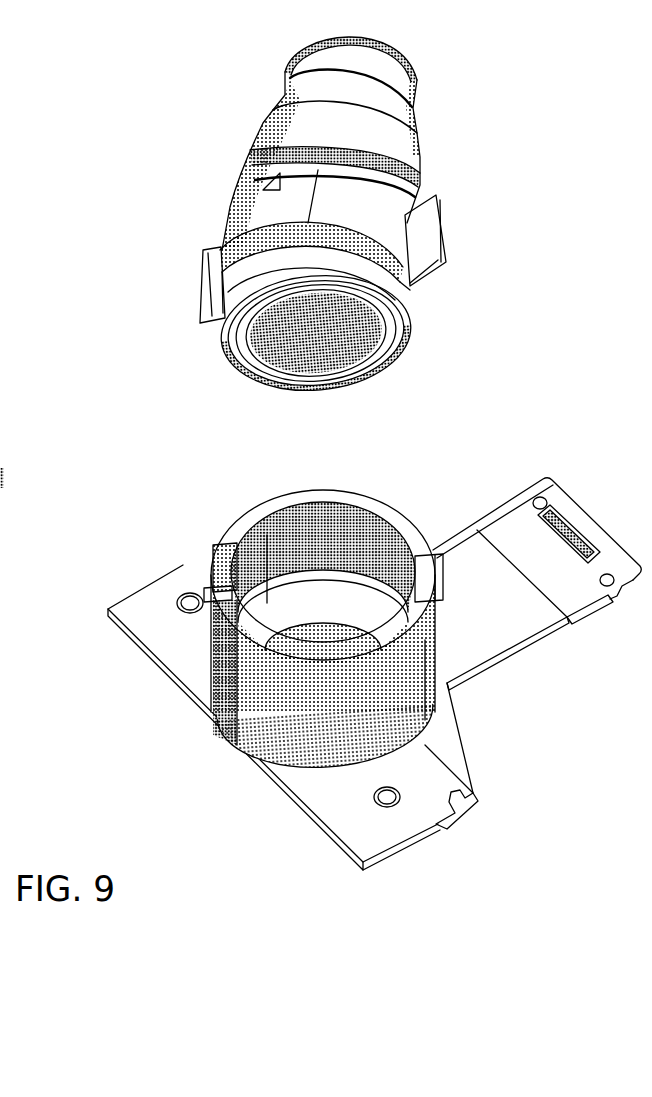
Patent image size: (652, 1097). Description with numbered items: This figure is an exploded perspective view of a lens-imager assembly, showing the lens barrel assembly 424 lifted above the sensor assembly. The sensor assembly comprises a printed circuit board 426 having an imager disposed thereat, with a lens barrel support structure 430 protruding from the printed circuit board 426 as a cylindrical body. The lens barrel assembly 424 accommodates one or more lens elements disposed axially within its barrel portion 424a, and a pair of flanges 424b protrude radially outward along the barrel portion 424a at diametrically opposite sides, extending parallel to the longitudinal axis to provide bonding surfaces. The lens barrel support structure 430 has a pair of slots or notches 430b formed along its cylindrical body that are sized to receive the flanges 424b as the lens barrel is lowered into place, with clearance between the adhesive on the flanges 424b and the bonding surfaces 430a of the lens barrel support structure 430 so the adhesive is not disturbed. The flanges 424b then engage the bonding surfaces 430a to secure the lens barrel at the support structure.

The lens barrel assembly 424 is at (301, 209).
The barrel portion 424a is at (282, 135).
The flanges 424b is at (202, 290).
The printed circuit board 426 is at (330, 793).
The lens barrel support structure 430 is at (357, 591).
The bonding surfaces 430a is at (220, 590).
The slots or notches 430b is at (226, 572).